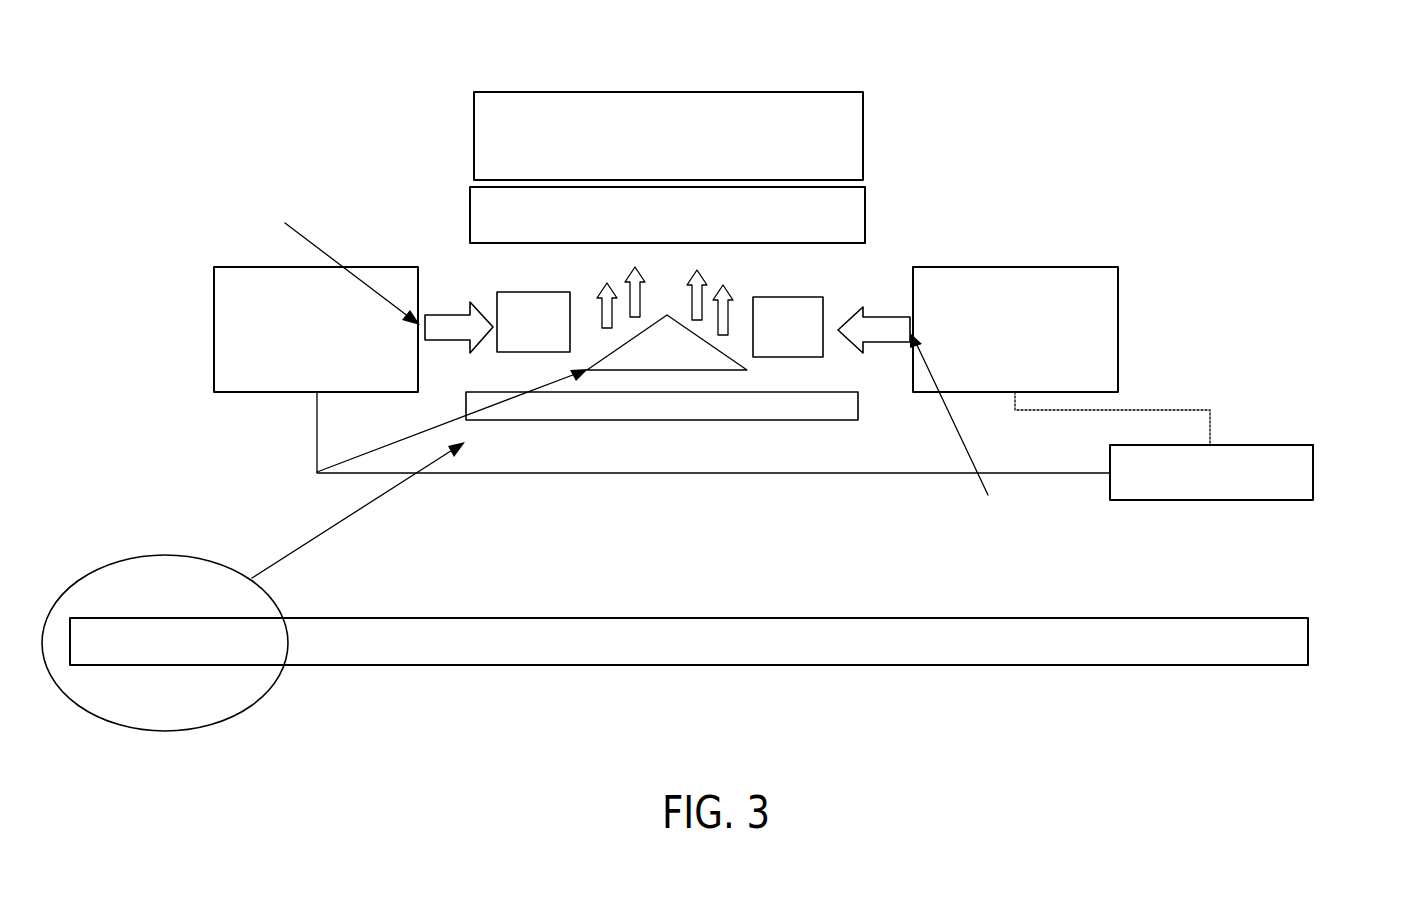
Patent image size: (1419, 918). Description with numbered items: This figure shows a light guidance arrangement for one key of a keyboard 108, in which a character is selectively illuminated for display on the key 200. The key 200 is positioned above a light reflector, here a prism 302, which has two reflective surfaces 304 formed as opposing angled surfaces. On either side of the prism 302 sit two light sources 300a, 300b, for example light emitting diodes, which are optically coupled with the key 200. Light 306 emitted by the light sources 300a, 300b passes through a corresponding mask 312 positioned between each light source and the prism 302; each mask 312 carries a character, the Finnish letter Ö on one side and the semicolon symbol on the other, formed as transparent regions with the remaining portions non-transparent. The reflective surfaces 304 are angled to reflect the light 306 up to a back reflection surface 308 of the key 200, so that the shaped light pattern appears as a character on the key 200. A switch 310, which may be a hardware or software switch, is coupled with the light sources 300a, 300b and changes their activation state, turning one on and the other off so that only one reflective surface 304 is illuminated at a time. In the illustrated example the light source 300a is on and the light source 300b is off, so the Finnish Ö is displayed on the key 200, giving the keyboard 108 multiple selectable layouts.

The key 200 is at (878, 58).
The back reflection surface 308 is at (470, 212).
The reflective surfaces 304 is at (665, 313).
The mask 312 is at (518, 292).
The light 306 is at (627, 391).
The light source 300a is at (214, 327).
The light source 300b is at (1118, 333).
The prism 302 is at (317, 472).
The switch 310 is at (1315, 456).
The keyboard 108 is at (1167, 665).